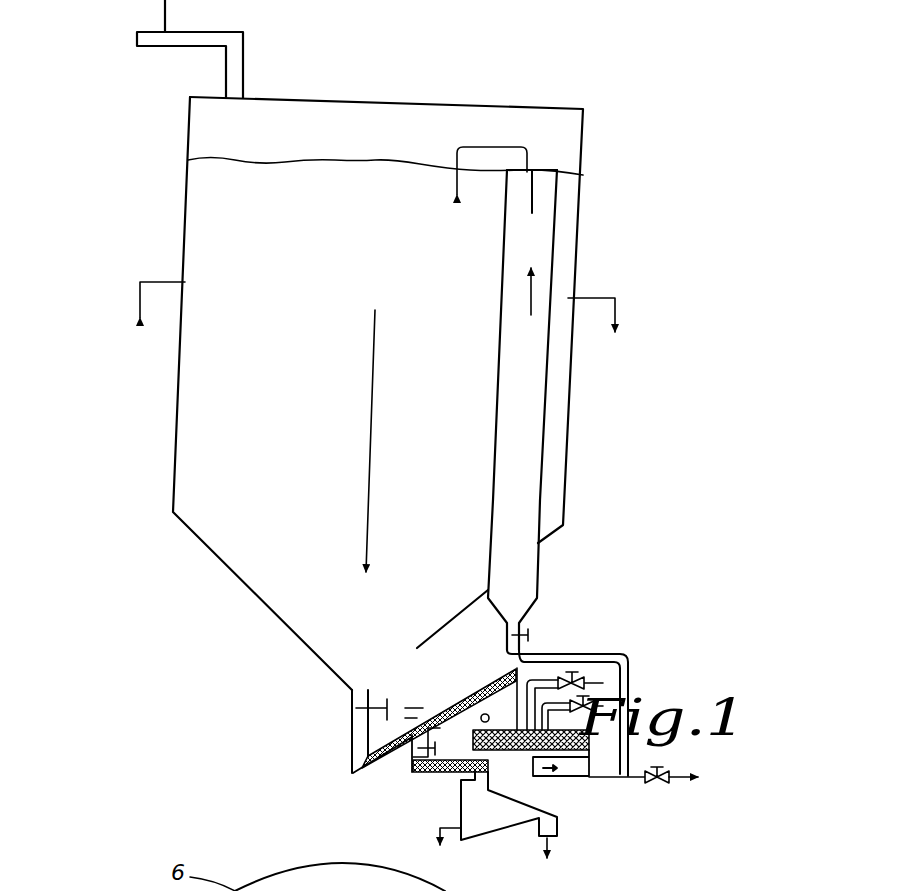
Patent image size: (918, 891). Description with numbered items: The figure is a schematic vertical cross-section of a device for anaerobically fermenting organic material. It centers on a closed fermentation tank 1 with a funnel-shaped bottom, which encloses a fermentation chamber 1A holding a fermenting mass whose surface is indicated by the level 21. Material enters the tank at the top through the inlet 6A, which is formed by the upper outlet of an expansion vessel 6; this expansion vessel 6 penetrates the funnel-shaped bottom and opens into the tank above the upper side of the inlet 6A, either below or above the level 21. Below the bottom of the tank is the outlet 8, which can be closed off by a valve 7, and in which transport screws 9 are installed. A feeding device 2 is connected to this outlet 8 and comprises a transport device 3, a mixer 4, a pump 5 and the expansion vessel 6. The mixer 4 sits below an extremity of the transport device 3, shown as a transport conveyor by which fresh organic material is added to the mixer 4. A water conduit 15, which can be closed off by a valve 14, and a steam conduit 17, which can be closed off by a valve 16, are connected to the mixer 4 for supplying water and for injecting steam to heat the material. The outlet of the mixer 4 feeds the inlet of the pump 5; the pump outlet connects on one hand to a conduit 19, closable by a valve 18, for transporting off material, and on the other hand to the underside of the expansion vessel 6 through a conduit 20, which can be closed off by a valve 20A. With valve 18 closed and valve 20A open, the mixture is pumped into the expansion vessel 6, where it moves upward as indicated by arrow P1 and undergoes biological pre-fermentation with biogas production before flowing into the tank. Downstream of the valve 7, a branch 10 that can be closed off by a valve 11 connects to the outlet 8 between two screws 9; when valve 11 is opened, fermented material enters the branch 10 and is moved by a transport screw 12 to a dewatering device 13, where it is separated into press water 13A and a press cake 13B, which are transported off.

The fermentation tank 1 is at (180, 196).
The fermentation chamber 1A is at (237, 424).
The feeding device 2 is at (605, 743).
The transport device 3 is at (451, 737).
The mixer 4 is at (520, 755).
The pump 5 is at (575, 777).
The expansion vessel 6 is at (527, 465).
The inlet 6A is at (540, 168).
The valve 7 is at (374, 707).
The outlet 8 is at (345, 702).
The transport screws 9 is at (450, 700).
The branch 10 is at (398, 755).
The valve 11 is at (352, 774).
The transport screw 12 is at (437, 772).
The dewatering device 13 is at (502, 820).
The press water 13A is at (430, 826).
The press cake 13B is at (558, 850).
The valve 14 is at (540, 685).
The water conduit 15 is at (574, 674).
The valve 16 is at (585, 697).
The steam conduit 17 is at (600, 720).
The valve 18 is at (654, 785).
The conduit 19 is at (683, 784).
The conduit 20 is at (630, 673).
The valve 20A is at (522, 632).
The level 21 is at (373, 160).
The arrow P1 is at (530, 298).